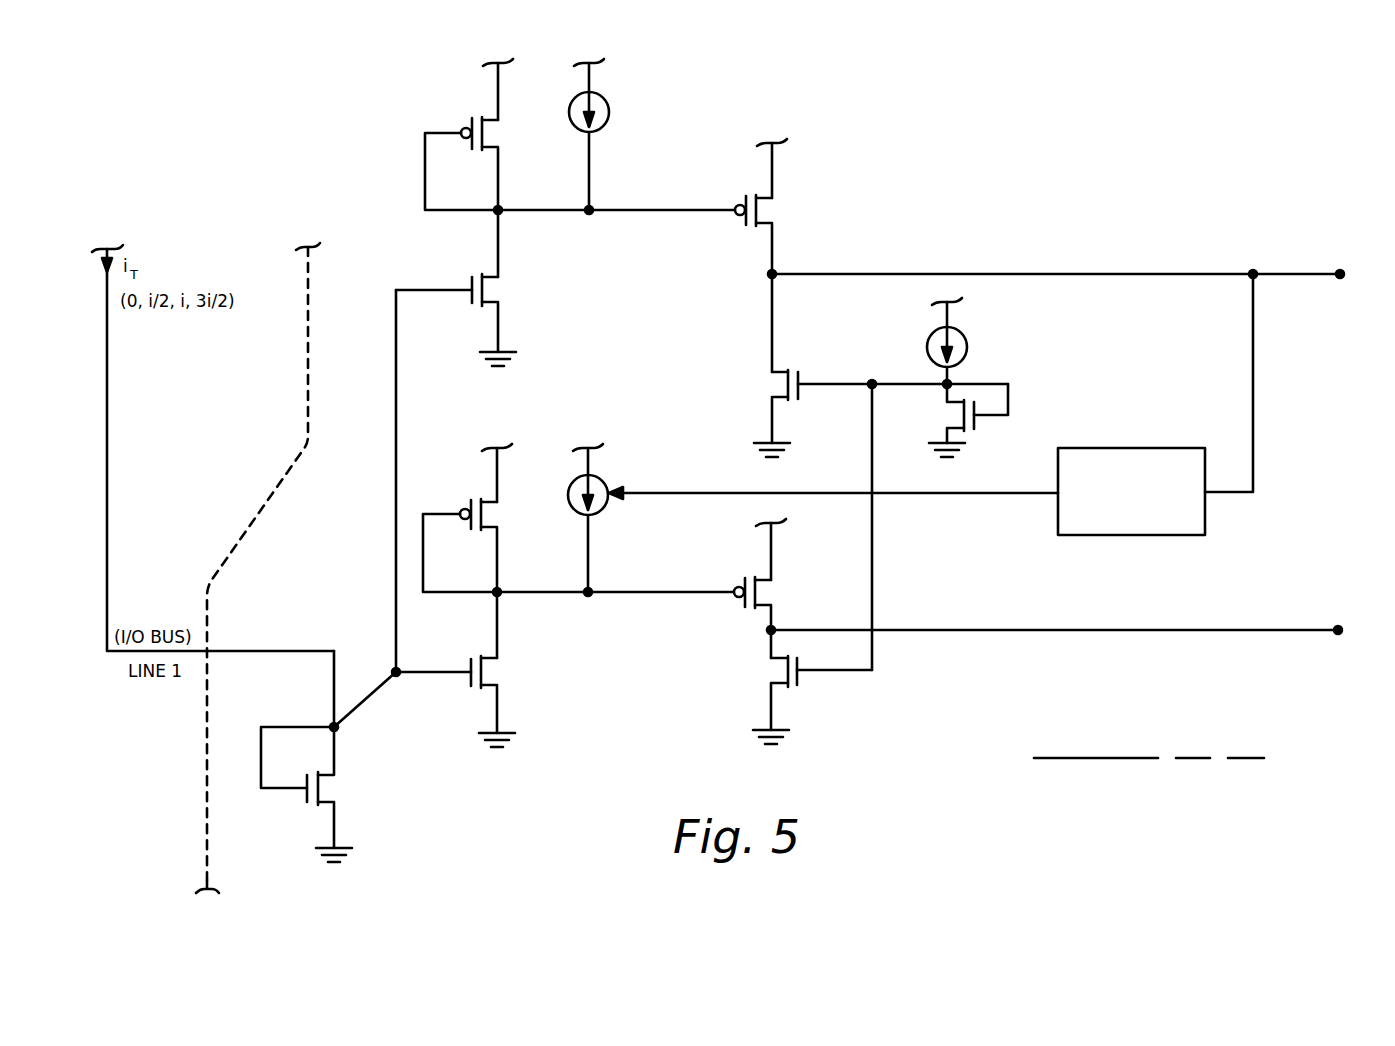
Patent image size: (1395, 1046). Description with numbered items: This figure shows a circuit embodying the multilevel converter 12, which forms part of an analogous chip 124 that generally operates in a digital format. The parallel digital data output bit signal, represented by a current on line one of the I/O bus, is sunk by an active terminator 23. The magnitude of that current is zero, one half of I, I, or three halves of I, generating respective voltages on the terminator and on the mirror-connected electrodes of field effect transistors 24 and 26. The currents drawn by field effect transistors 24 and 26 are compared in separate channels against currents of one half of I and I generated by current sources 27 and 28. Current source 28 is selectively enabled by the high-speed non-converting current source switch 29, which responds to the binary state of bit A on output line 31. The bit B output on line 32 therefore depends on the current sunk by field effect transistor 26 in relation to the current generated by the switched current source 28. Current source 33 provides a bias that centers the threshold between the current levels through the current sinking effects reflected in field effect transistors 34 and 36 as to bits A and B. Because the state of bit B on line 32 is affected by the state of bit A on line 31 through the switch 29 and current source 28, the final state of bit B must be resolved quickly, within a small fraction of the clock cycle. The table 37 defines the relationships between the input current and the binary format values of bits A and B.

The multilevel converter 12 is at (237, 137).
The analogous chip 124 is at (207, 790).
The active terminator 23 is at (340, 788).
The field effect transistor 24 is at (493, 292).
The field effect transistor 26 is at (493, 677).
The current source 27 is at (603, 98).
The current source 28 is at (602, 481).
The high-speed non-converting current source switch 29 is at (1058, 466).
The output line 31 is at (1298, 274).
The line 32 is at (1298, 630).
The current source 33 is at (961, 333).
The field effect transistor 34 is at (784, 386).
The field effect transistor 36 is at (784, 676).
The table 37 is at (1017, 658).